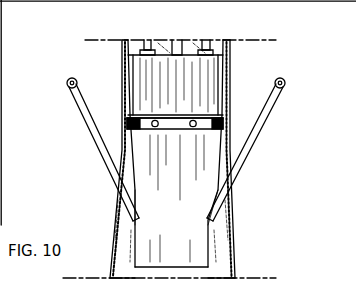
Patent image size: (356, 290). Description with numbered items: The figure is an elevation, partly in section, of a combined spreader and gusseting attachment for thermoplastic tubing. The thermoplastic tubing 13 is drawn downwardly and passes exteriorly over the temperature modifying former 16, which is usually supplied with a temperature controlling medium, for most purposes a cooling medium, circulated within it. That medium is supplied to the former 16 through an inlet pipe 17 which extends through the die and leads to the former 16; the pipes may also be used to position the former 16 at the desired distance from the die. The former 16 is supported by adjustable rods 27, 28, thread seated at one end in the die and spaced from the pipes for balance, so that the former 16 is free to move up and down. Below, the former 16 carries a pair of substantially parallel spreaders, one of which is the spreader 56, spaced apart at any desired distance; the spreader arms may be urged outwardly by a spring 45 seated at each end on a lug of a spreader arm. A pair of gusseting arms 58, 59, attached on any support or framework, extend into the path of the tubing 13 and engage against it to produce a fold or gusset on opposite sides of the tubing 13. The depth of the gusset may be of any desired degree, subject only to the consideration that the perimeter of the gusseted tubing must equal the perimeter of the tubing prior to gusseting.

The thermoplastic tubing 13 is at (227, 122).
The temperature modifying former 16 is at (211, 76).
The inlet pipe 17 is at (183, 43).
The adjustable rod 27 is at (146, 46).
The adjustable rod 28 is at (208, 43).
The spring 45 is at (141, 0).
The spreader 56 is at (203, 247).
The gusseting arm 58 is at (93, 139).
The gusseting arm 59 is at (253, 144).